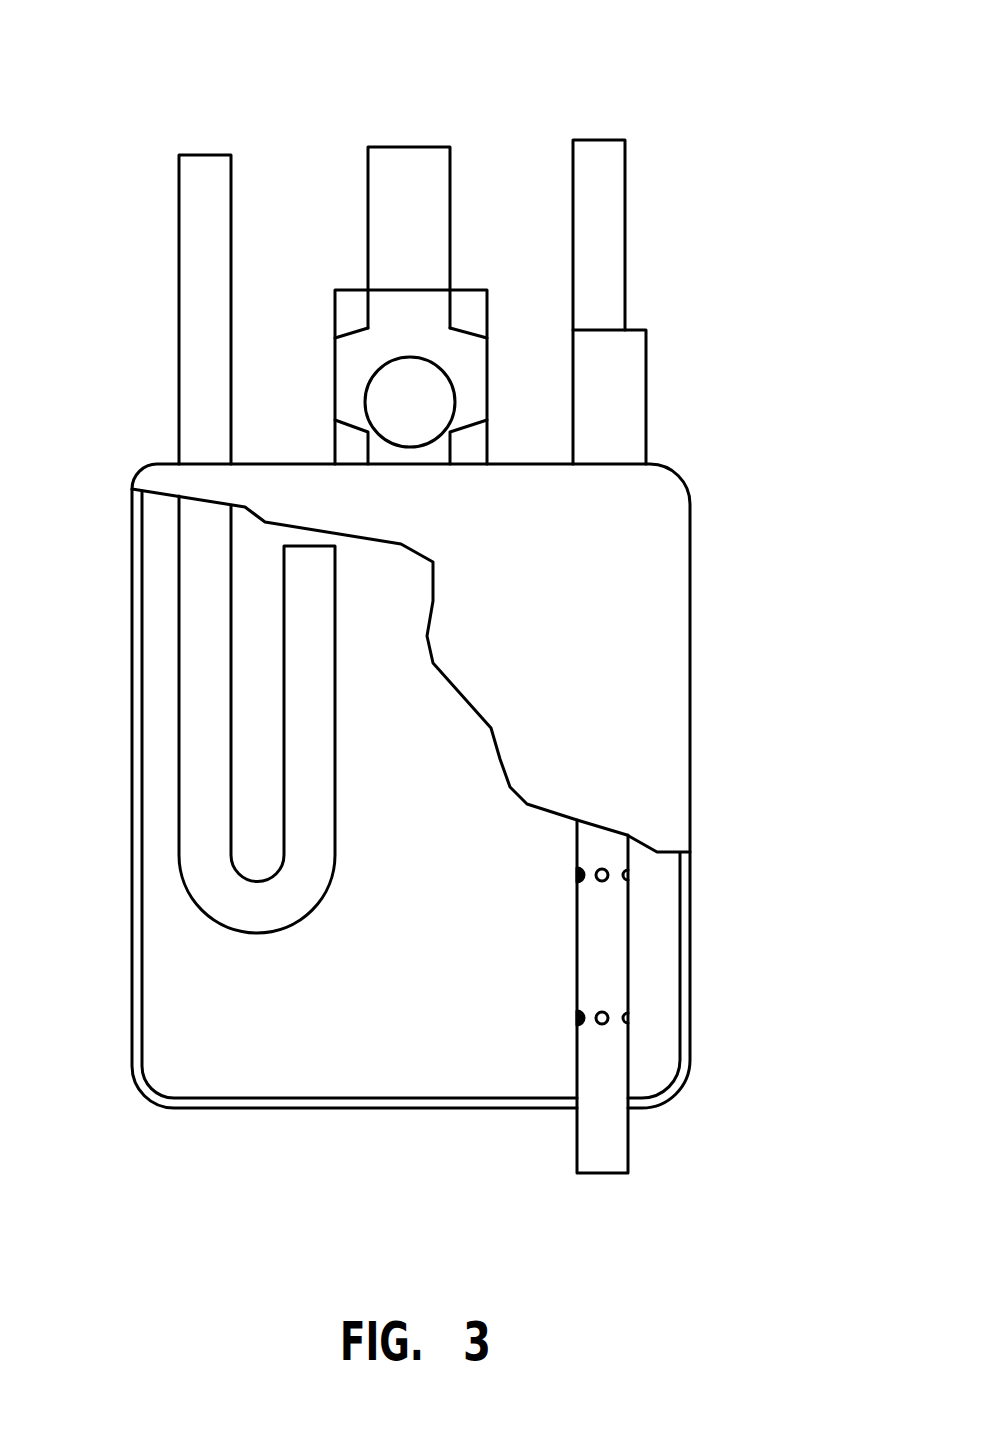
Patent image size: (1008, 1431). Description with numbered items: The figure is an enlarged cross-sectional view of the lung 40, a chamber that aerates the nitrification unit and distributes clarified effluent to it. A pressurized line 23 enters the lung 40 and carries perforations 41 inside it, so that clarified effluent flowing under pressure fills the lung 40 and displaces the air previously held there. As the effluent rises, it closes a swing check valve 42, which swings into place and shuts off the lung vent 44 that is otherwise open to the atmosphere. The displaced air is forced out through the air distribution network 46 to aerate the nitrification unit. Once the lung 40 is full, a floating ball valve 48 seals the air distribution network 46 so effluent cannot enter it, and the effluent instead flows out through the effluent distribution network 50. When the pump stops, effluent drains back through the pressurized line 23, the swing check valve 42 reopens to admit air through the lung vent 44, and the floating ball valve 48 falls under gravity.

The pressurized line 23 is at (600, 1142).
The lung 40 is at (610, 629).
The perforations 41 is at (610, 883).
The swing check valve 42 is at (700, 320).
The lung vent 44 is at (597, 203).
The air distribution network 46 is at (403, 178).
The floating ball valve 48 is at (413, 397).
The effluent distribution network 50 is at (200, 265).